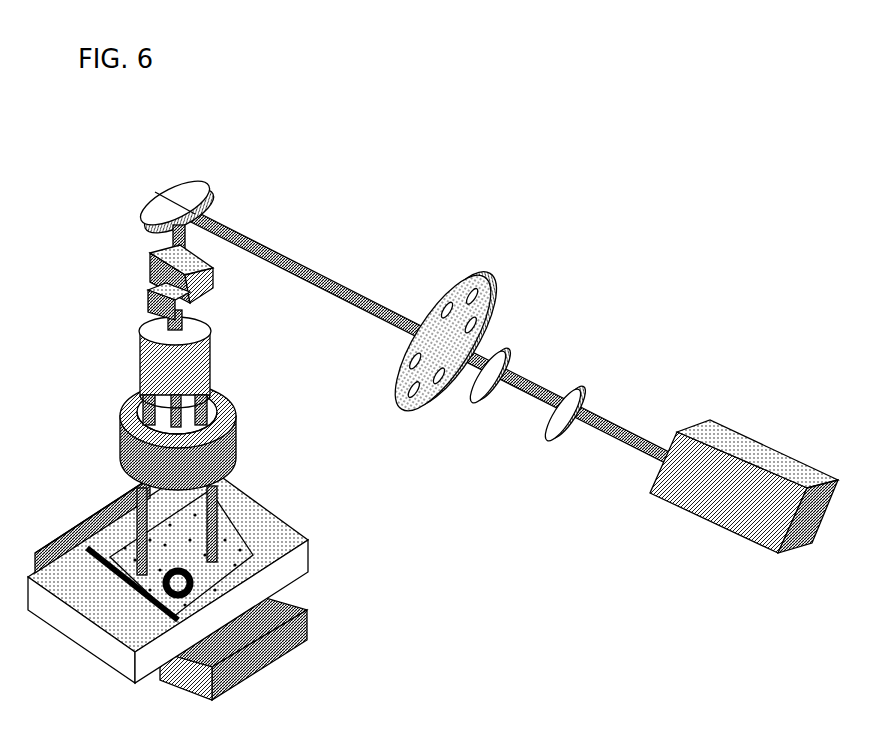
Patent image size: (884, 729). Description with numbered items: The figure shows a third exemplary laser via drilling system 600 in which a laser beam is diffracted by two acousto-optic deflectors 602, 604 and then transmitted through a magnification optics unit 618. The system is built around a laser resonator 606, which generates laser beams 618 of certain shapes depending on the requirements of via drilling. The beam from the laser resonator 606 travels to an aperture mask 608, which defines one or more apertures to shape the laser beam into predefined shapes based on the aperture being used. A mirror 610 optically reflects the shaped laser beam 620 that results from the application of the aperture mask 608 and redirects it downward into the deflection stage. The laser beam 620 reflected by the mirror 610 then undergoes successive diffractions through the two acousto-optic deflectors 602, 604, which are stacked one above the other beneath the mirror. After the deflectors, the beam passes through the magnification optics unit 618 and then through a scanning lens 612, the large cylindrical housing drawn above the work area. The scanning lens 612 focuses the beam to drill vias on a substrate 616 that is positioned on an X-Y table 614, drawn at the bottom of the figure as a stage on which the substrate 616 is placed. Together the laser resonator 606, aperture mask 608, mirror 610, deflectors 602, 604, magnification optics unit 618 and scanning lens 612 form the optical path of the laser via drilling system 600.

The laser via drilling system 600 is at (416, 127).
The acousto-optic deflector 602 is at (150, 261).
The acousto-optic deflector 604 is at (148, 293).
The laser resonator 606 is at (758, 441).
The aperture mask 608 is at (488, 290).
The mirror 610 is at (208, 190).
The scanning lens 612 is at (237, 441).
The X-Y table 614 is at (283, 516).
The substrate 616 is at (253, 557).
The magnification optics unit 618 is at (213, 351).
The shaped laser beam 620 is at (325, 272).